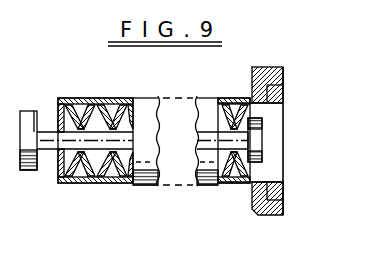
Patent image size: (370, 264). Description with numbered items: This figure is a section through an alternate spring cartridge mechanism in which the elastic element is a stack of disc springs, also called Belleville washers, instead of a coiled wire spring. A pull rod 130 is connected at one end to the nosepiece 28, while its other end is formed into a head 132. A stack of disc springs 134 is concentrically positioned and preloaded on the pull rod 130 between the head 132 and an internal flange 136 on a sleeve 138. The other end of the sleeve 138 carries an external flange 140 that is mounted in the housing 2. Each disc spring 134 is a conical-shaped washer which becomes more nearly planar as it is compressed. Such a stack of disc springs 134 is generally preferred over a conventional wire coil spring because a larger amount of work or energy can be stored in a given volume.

The housing 2 is at (281, 78).
The nosepiece 28 is at (30, 170).
The pull rod 130 is at (43, 150).
The head 132 is at (257, 143).
The disc springs 134 is at (113, 181).
The internal flange 136 is at (57, 108).
The sleeve 138 is at (107, 100).
The external flange 140 is at (284, 188).